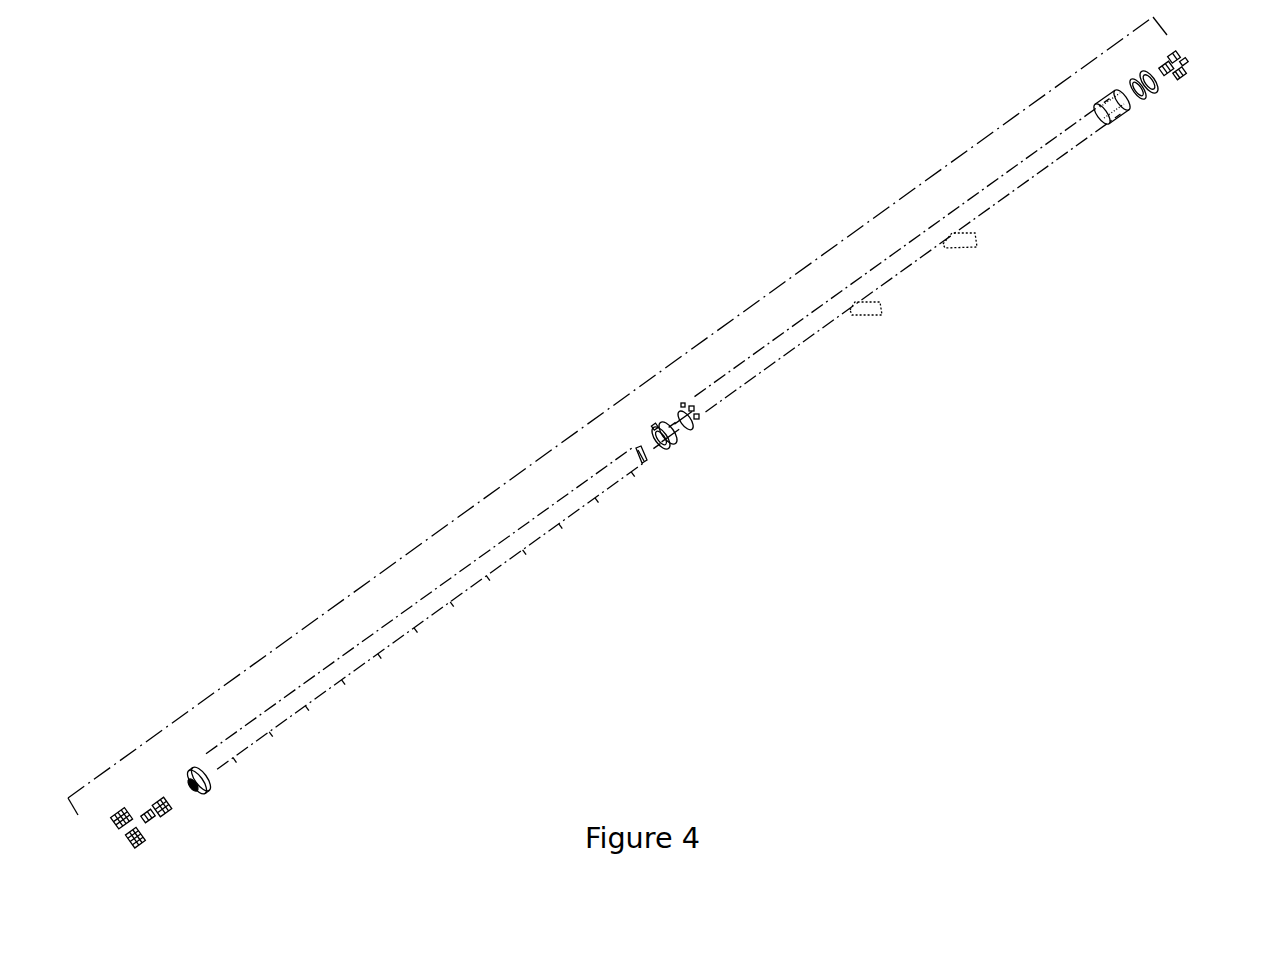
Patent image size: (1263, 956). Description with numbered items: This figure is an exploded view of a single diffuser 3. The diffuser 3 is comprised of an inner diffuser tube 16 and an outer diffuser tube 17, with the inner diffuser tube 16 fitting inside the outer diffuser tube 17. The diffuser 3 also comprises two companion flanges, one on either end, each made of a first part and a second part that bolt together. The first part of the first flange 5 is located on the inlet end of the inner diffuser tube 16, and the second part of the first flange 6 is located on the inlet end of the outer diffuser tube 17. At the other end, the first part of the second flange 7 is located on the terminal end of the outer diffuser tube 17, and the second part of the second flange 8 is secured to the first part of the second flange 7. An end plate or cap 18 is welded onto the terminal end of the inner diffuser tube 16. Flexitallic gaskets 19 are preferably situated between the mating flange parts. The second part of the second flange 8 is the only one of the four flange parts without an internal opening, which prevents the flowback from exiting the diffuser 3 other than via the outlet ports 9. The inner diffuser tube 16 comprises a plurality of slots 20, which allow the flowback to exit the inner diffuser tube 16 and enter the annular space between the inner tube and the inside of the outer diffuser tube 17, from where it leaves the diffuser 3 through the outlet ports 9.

The diffuser 3 is at (607, 408).
The first part of first flange 5 is at (210, 788).
The second part of first flange 6 is at (690, 440).
The first part of second flange 7 is at (1128, 112).
The second part of second flange 8 is at (1137, 72).
The outlet port 9 is at (882, 310).
The inner diffuser tube 16 is at (380, 657).
The outer diffuser tube 17 is at (788, 347).
The end plate 18 is at (647, 462).
The Flexitallic gasket 19 is at (1140, 102).
The slot 20 is at (526, 555).